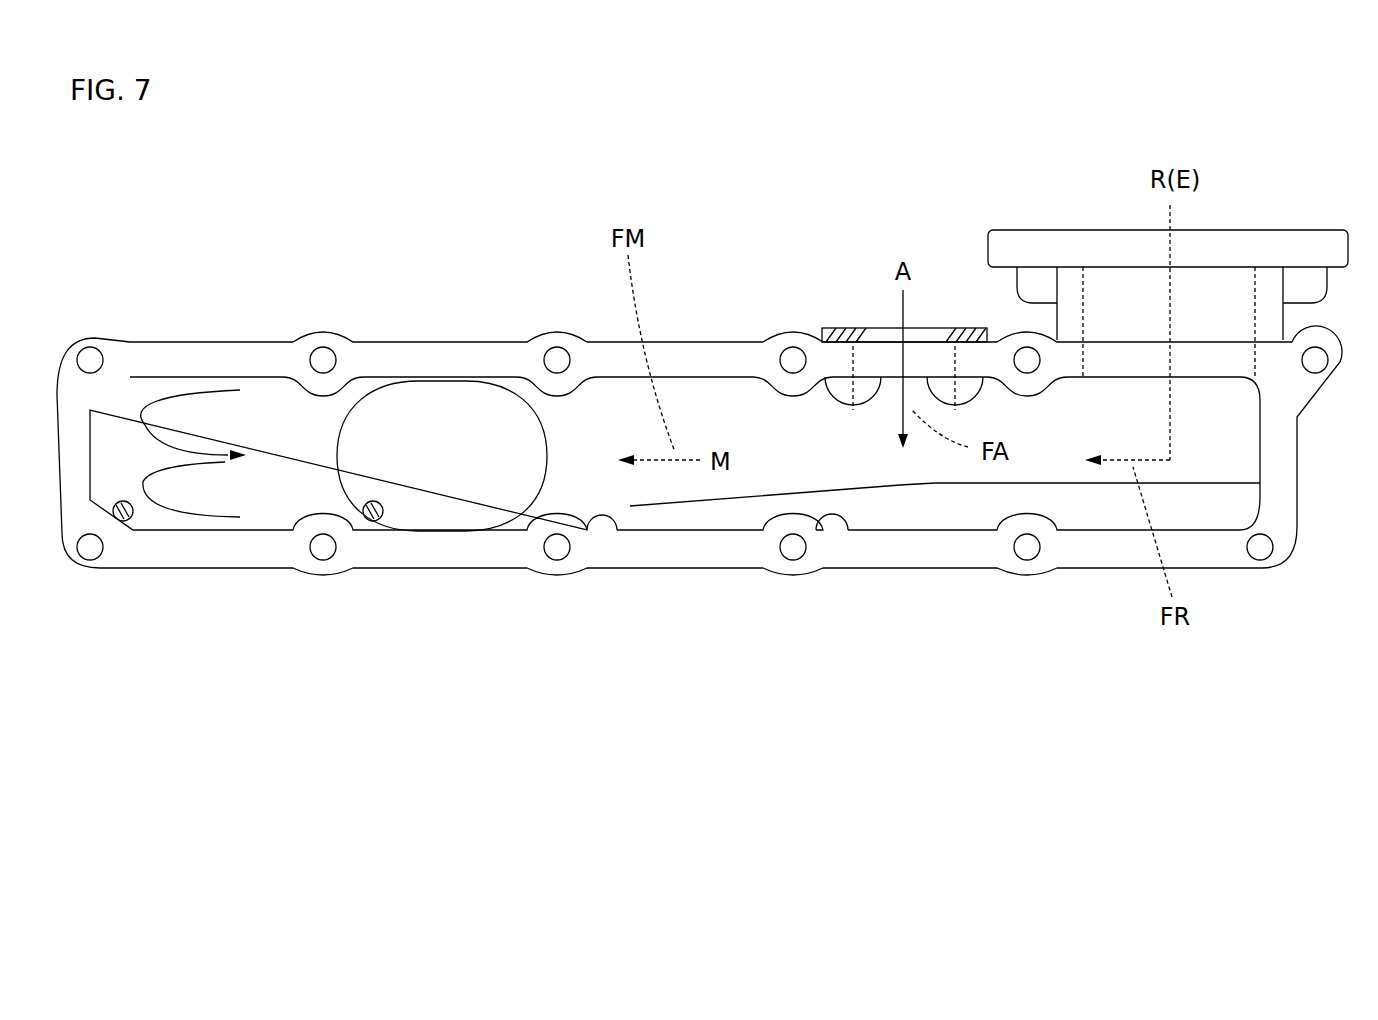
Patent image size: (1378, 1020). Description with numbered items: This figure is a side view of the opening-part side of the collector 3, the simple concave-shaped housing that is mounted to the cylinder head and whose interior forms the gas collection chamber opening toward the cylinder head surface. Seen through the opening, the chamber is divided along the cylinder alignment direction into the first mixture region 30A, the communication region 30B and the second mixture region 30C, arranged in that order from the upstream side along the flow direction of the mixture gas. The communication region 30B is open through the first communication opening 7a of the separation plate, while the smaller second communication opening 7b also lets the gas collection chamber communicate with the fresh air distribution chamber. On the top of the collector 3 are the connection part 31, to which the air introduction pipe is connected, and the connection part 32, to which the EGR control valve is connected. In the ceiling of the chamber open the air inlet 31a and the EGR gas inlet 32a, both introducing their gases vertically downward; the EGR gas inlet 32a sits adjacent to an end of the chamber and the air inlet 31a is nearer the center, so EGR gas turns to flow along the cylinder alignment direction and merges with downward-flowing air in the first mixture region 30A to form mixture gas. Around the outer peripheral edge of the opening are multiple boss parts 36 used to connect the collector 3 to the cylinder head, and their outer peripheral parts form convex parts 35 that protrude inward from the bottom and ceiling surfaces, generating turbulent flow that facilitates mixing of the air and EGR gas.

The collector 3 is at (190, 333).
The first communication opening 7a is at (387, 522).
The second communication opening 7b is at (128, 522).
The first mixture region 30A is at (745, 494).
The communication region 30B is at (441, 498).
The second mixture region 30C is at (265, 508).
The connection part 31 is at (835, 328).
The air inlet 31a is at (870, 328).
The connection part 32 is at (1025, 230).
The EGR gas inlet 32a is at (1094, 245).
The convex part 35 is at (608, 520).
The boss part 36 is at (560, 552).